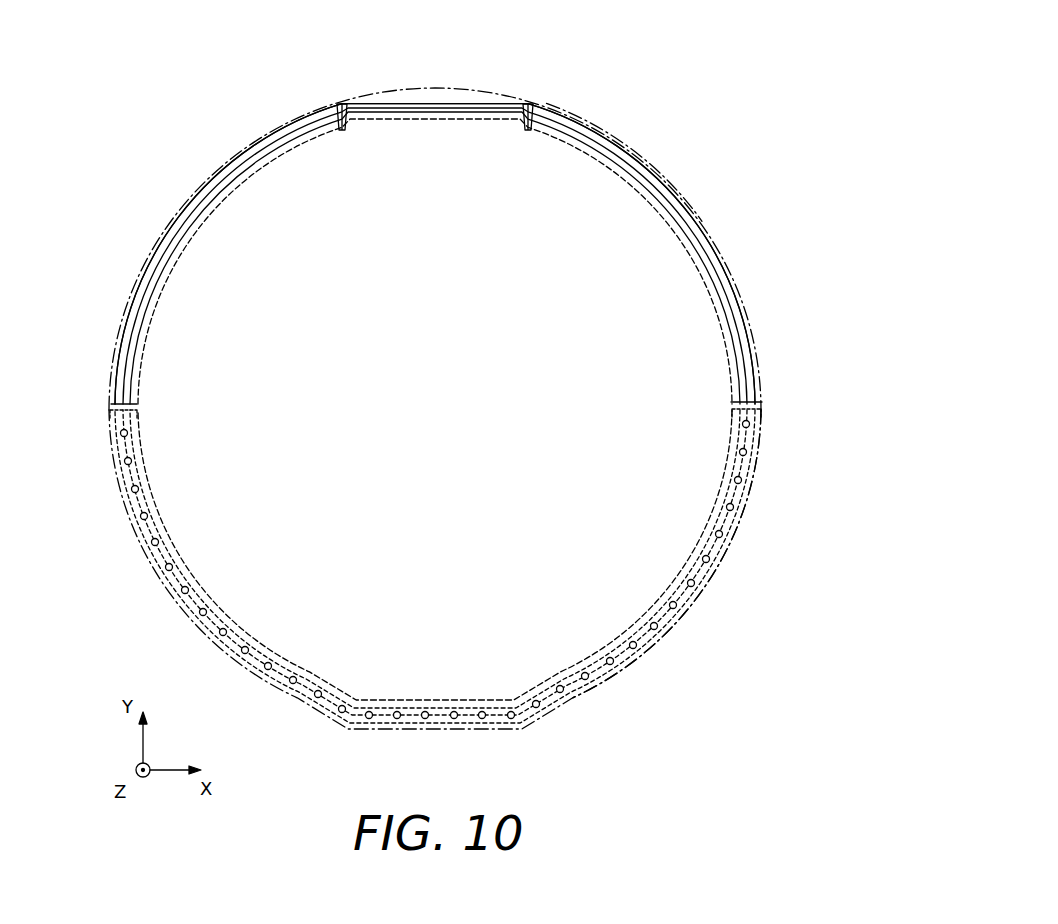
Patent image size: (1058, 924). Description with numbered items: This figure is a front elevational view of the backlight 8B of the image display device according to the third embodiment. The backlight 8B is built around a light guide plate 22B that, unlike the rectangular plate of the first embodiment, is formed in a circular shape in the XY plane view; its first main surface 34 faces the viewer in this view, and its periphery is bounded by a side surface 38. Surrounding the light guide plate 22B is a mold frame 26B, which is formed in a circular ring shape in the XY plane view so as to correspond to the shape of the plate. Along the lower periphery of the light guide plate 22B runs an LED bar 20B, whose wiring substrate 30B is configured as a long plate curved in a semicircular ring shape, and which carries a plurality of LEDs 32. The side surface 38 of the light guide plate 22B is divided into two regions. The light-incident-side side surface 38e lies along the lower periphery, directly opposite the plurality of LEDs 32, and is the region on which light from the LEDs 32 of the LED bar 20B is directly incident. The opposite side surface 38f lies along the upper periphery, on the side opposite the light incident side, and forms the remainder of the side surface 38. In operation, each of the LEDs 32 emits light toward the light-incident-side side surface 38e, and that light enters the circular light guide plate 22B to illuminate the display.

The backlight 8B is at (612, 86).
The side surface 38 is at (687, 200).
The opposite side surface 38f is at (637, 153).
The light-incident-side side surface 38e is at (712, 588).
The mold frame 26B is at (153, 257).
The light guide plate 22B is at (183, 347).
The first main surface 34 is at (173, 435).
The LED bar 20B is at (435, 597).
The wiring substrate 30B is at (520, 721).
The LEDs 32 is at (530, 712).